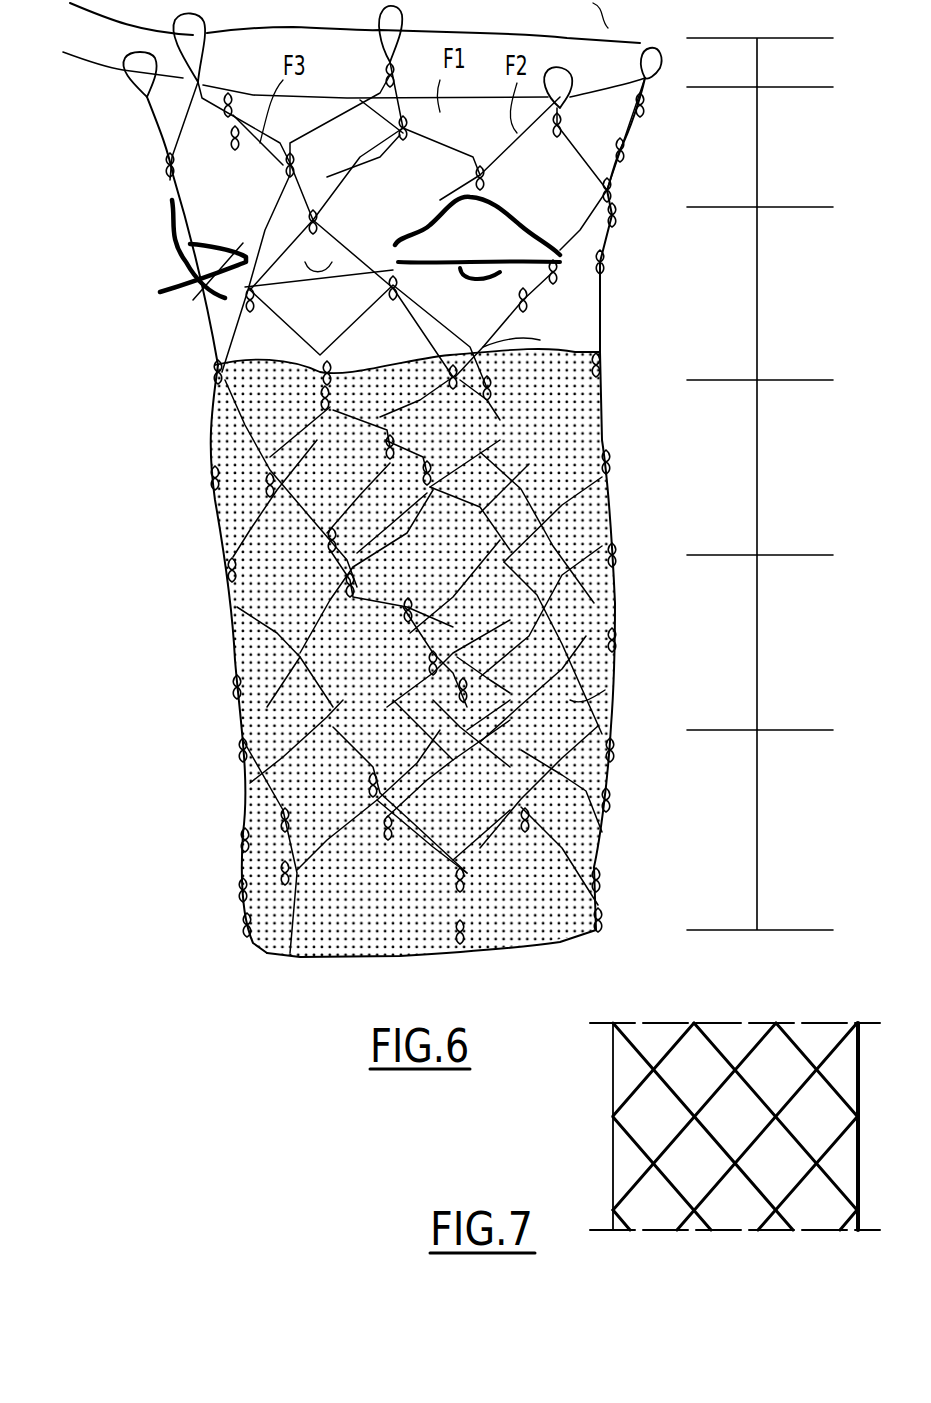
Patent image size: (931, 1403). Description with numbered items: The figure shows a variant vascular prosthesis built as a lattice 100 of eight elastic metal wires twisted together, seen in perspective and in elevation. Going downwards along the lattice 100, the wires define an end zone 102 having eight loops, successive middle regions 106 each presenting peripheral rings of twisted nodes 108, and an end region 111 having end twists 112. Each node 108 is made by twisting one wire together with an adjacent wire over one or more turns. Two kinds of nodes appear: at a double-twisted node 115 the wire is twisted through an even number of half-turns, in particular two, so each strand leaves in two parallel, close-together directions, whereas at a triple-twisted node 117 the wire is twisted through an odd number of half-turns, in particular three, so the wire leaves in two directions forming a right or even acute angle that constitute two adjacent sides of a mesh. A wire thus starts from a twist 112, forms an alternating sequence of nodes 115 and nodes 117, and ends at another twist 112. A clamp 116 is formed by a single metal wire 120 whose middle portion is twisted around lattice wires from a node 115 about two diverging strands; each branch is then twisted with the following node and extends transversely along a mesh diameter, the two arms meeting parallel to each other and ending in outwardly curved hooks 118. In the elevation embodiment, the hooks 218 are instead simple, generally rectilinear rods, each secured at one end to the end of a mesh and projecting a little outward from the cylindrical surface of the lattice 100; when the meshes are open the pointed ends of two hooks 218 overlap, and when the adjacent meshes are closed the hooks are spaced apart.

In FIG. 6, the lattice 100 is at (361, 480).
In FIG. 6, the end zone 102 is at (760, 62).
In FIG. 6, the middle regions 106 is at (760, 408).
In FIG. 6, the twisted nodes 108 is at (429, 225).
In FIG. 6, the end region 111 is at (760, 830).
In FIG. 6, the end twists 112 is at (474, 908).
In FIG. 6, the double-twisted node 115 is at (421, 503).
In FIG. 6, the clamp 116 is at (413, 616).
In FIG. 6, the triple-twisted node 117 is at (580, 509).
In FIG. 6, the hooks 118 is at (418, 274).
In FIG. 6, the metal wire 120 is at (480, 221).
In FIG. 7, the hooks 218 is at (735, 1100).